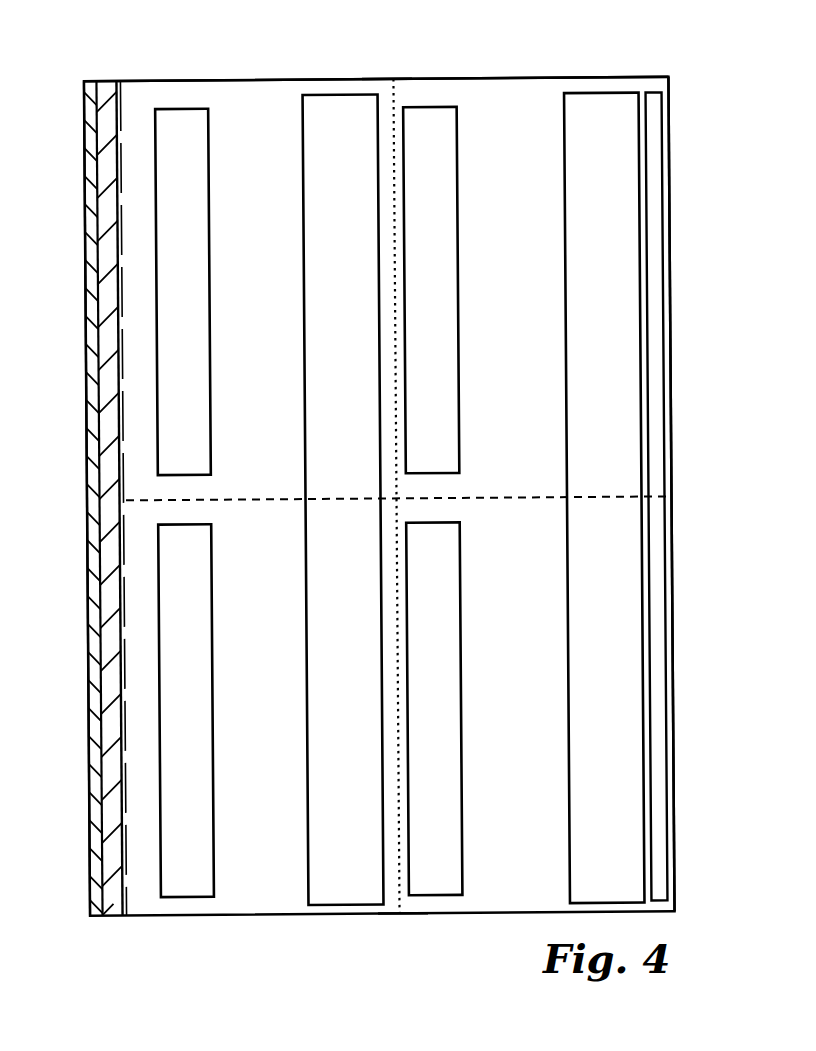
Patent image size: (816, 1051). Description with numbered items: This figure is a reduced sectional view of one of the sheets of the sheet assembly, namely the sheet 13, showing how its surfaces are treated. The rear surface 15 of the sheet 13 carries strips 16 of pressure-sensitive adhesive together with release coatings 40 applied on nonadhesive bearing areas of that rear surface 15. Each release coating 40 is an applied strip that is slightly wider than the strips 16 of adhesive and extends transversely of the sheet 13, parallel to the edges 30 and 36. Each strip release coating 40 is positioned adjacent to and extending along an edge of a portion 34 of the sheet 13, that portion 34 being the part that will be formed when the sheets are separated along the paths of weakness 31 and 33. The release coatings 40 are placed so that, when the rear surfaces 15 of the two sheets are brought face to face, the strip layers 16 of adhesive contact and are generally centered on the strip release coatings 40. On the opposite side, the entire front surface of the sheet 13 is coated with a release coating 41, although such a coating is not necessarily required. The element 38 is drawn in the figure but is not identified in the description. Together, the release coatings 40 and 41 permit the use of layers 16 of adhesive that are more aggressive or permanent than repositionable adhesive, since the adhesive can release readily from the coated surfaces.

The sheet 13 is at (680, 142).
The rear surface 15 is at (255, 102).
The strips of adhesive 16 is at (433, 130).
The edge 30 is at (107, 303).
The path of weakness 31 is at (95, 225).
The path of weakness 33 is at (395, 97).
The portion 34 is at (400, 71).
The edge 36 is at (673, 552).
The flange strip 38 is at (657, 387).
The release coating 40 is at (613, 310).
The release coating 41 is at (88, 133).